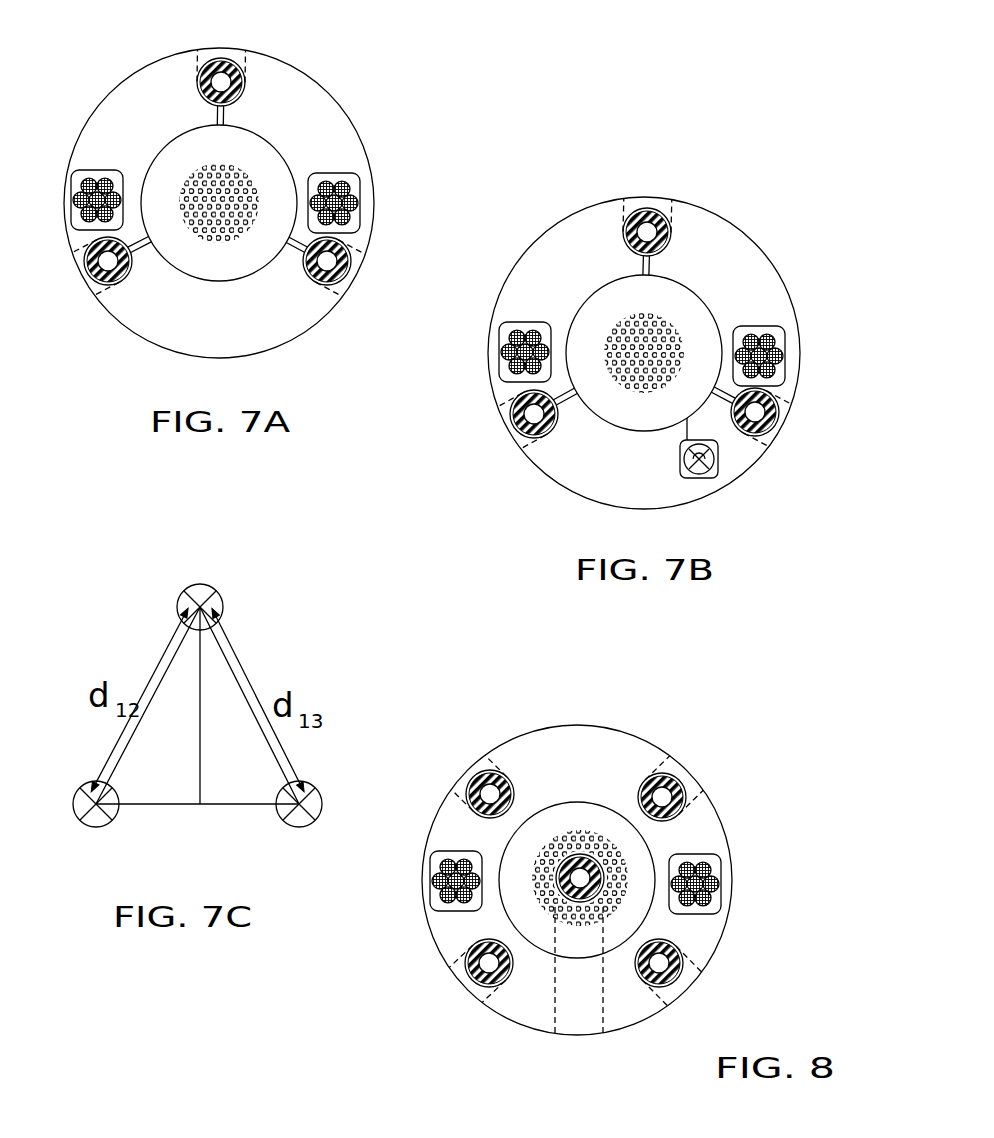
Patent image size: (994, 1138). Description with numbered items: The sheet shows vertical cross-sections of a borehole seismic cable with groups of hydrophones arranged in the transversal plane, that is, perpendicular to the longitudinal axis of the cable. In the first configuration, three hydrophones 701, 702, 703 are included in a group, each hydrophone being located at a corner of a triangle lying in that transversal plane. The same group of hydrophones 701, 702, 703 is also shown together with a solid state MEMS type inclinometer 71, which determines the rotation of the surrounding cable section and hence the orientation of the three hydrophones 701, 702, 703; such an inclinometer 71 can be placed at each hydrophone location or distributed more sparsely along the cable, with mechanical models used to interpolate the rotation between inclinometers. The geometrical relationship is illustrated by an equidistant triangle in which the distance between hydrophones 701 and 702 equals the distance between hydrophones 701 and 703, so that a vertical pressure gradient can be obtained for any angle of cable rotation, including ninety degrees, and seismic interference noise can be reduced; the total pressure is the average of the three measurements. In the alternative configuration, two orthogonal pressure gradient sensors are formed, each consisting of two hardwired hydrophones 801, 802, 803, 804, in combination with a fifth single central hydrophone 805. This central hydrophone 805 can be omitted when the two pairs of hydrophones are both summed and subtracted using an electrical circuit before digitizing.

In FIG. 7A, the hydrophone 701 is at (228, 62).
In FIG. 7B, the hydrophone 701 is at (654, 210).
In FIG. 7C, the hydrophone 701 is at (217, 597).
In FIG. 7A, the hydrophone 702 is at (95, 263).
In FIG. 7B, the hydrophone 702 is at (520, 422).
In FIG. 7C, the hydrophone 702 is at (92, 800).
In FIG. 7A, the hydrophone 703 is at (350, 263).
In FIG. 7B, the hydrophone 703 is at (774, 417).
In FIG. 7C, the hydrophone 703 is at (295, 827).
In FIG. 7B, the inclinometer 71 is at (719, 463).
In FIG. 8, the hydrophone 801 is at (470, 778).
In FIG. 8, the hydrophone 802 is at (473, 977).
In FIG. 8, the hydrophone 803 is at (665, 987).
In FIG. 8, the hydrophone 804 is at (672, 781).
In FIG. 8, the central hydrophone 805 is at (593, 857).